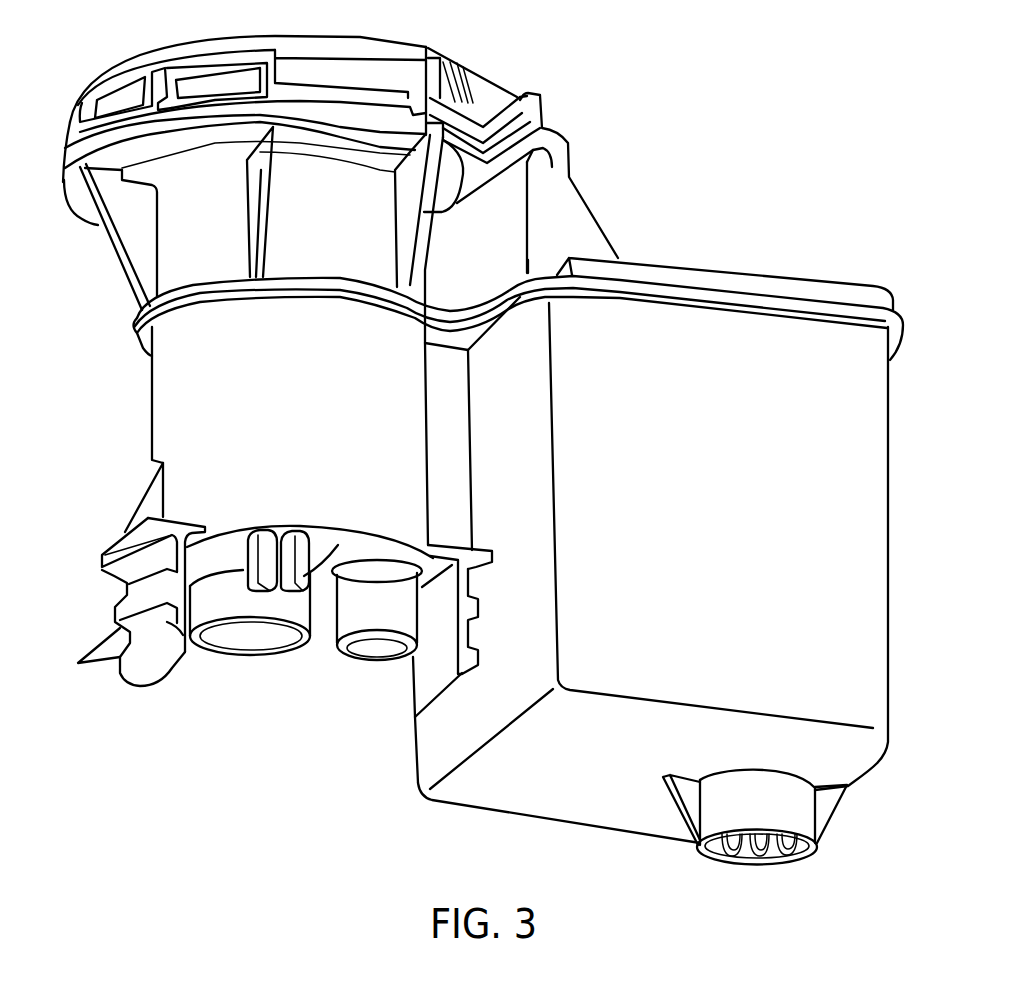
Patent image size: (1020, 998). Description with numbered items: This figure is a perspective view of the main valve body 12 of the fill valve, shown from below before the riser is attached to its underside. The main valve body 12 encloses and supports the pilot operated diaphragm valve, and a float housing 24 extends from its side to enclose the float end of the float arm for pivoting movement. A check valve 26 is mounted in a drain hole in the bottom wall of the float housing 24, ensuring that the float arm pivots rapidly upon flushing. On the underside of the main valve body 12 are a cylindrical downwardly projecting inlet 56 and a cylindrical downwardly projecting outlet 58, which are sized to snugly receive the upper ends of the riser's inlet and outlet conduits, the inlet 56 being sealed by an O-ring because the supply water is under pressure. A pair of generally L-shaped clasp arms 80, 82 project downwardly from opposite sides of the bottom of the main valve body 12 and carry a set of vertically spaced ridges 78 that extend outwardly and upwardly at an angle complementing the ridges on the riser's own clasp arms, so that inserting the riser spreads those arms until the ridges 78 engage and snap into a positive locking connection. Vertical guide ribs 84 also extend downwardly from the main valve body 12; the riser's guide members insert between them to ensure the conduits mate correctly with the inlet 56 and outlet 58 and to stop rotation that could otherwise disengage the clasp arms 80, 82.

The main valve body 12 is at (150, 383).
The float housing 24 is at (744, 546).
The check valve 26 is at (823, 863).
The inlet 56 is at (232, 657).
The outlet 58 is at (345, 657).
The ridges 78 is at (79, 664).
The clasp arm 80 is at (148, 682).
The clasp arm 82 is at (412, 688).
The guide ribs 84 is at (255, 557).